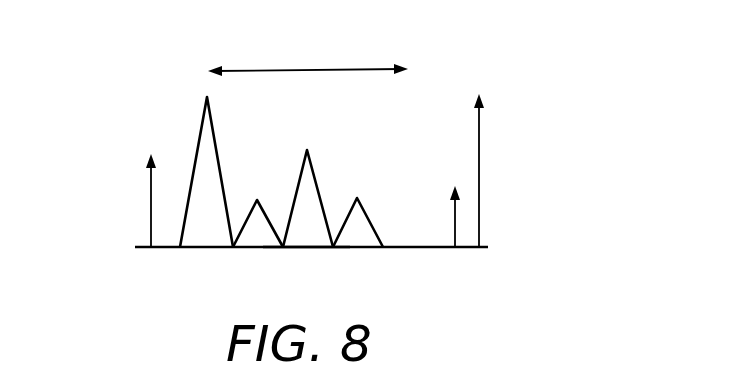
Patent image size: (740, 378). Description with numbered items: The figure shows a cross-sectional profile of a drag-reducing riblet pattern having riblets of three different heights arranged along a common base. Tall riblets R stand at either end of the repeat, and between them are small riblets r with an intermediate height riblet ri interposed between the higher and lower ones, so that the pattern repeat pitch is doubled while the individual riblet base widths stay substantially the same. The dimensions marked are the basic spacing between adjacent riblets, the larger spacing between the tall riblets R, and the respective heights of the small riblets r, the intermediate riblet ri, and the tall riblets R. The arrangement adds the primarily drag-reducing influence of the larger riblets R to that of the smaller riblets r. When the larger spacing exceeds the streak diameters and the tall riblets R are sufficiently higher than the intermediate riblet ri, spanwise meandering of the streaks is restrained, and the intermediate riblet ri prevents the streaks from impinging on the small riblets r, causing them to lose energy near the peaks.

The larger riblet R is at (217, 143).
The small riblet r is at (263, 207).
The intermediate height riblet ri is at (312, 168).